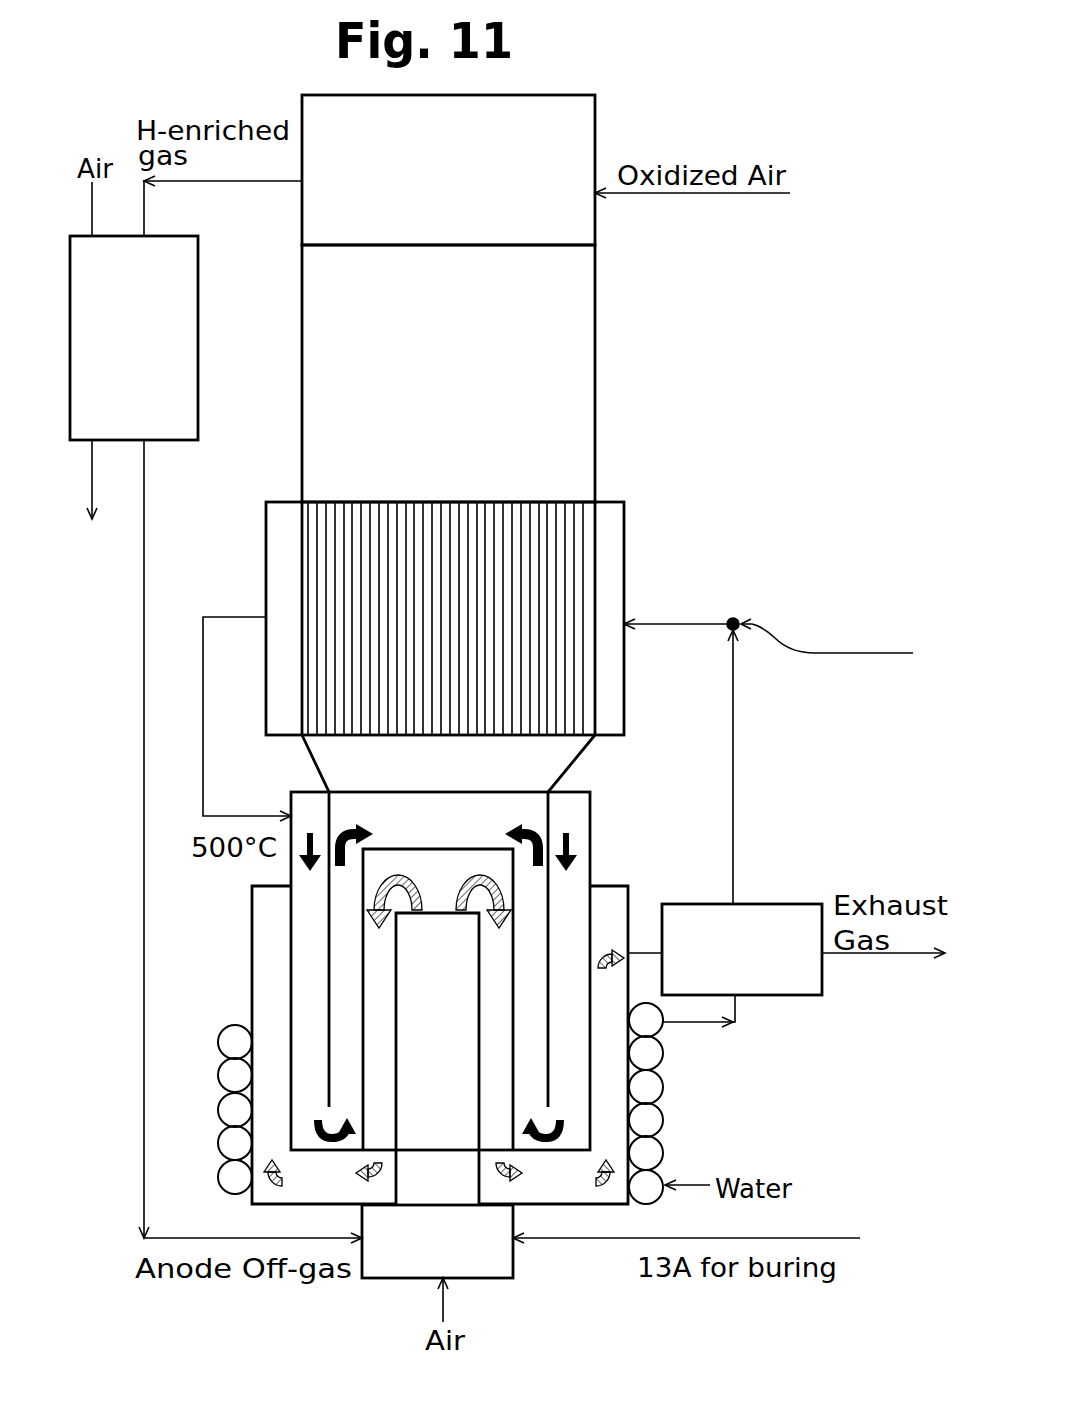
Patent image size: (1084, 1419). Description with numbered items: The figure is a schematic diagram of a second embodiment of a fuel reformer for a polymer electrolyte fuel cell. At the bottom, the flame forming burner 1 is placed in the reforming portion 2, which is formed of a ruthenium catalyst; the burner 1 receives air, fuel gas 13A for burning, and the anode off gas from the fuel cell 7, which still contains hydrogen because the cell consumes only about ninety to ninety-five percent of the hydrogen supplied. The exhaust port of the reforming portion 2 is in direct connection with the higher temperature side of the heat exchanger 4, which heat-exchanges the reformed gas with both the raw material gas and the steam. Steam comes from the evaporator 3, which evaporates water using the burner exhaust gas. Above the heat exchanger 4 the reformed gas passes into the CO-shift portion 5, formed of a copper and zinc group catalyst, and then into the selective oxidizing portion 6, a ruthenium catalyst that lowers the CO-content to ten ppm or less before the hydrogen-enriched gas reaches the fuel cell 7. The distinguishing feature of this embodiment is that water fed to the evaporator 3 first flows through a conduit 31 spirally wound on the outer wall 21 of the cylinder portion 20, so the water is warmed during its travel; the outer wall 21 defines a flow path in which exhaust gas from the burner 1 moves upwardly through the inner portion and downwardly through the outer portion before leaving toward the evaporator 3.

The flame forming burner 1 is at (385, 1278).
The reforming portion 2 is at (605, 798).
The evaporator 3 is at (788, 904).
The heat exchanger 4 is at (624, 528).
The CO-shift portion 5 is at (595, 358).
The selective oxidizing portion 6 is at (595, 120).
The fuel cell 7 is at (198, 283).
The 13A city gas fuel supply line 13A is at (768, 743).
The cylinder portion 20 is at (573, 1205).
The outer wall 21 is at (630, 973).
The conduit 31 is at (663, 1088).